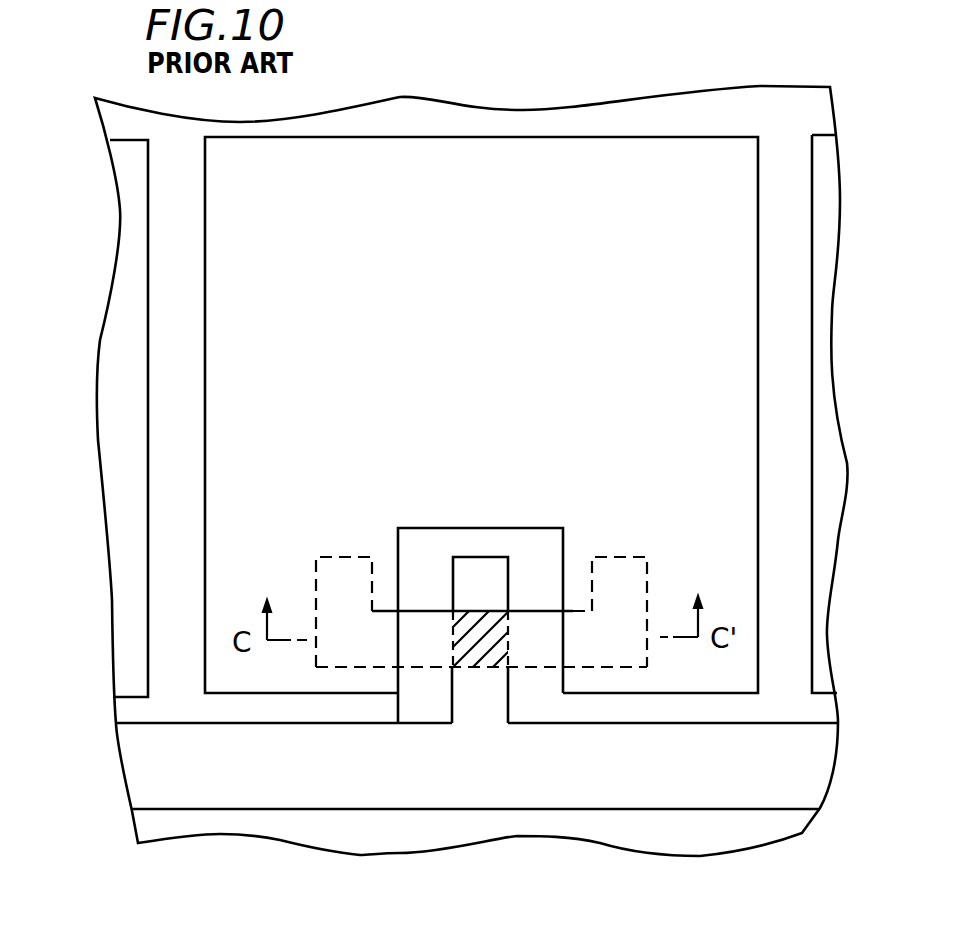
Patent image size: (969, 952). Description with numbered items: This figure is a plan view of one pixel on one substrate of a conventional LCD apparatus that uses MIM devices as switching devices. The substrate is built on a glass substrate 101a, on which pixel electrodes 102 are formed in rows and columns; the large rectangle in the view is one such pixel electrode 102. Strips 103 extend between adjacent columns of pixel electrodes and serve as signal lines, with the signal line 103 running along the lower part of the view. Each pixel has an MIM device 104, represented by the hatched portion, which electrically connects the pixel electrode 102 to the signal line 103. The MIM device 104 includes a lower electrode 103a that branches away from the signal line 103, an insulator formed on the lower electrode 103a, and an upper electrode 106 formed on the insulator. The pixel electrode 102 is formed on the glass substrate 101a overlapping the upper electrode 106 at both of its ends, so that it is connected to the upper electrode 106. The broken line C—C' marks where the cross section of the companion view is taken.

The glass substrate 101a is at (782, 163).
The pixel electrode 102 is at (572, 158).
The strip 103 is at (308, 770).
The lower electrode 103a is at (467, 574).
The MIM device 104 is at (475, 684).
The upper electrode 106 is at (538, 653).